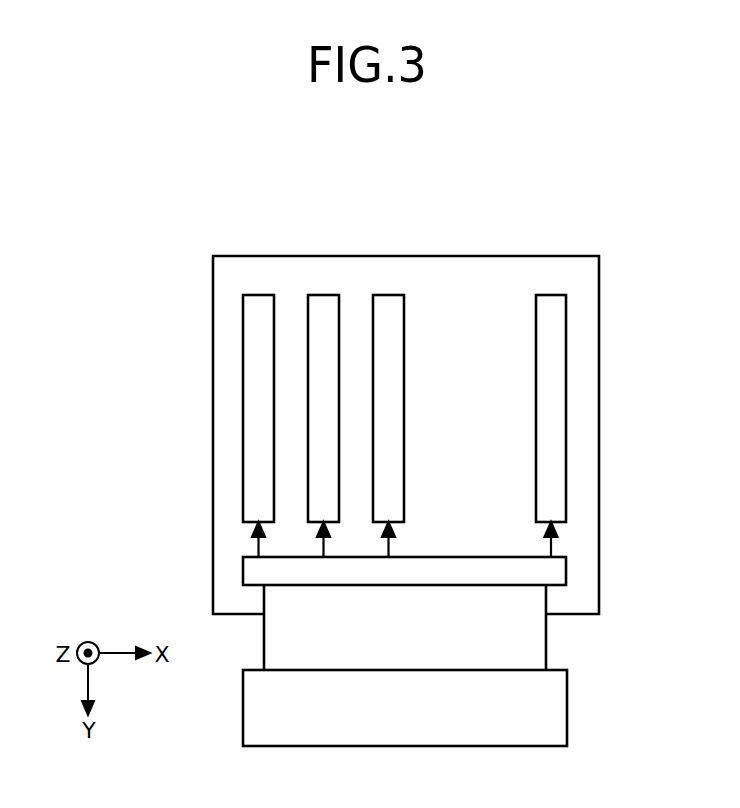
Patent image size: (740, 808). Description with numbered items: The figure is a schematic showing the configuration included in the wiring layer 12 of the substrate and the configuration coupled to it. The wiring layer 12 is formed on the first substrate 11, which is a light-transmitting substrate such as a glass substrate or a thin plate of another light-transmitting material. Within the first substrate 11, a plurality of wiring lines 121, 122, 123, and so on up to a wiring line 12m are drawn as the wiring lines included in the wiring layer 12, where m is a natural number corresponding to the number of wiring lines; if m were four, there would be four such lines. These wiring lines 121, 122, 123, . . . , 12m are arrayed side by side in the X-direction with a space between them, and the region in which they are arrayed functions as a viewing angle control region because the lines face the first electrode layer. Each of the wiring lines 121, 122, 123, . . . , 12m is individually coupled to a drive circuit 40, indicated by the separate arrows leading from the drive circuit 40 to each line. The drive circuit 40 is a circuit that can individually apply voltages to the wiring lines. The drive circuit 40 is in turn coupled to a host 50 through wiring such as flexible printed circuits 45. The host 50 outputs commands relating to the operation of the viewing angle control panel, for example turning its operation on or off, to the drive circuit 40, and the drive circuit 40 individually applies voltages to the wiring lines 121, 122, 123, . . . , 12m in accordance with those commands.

The first substrate 11 is at (593, 303).
The wiring layer 12 is at (231, 202).
The wiring line 121 is at (260, 310).
The wiring line 122 is at (325, 310).
The wiring line 123 is at (392, 310).
The wiring line 12m is at (549, 310).
The drive circuit 40 is at (550, 573).
The flexible printed circuits 45 is at (532, 640).
The host 50 is at (532, 707).